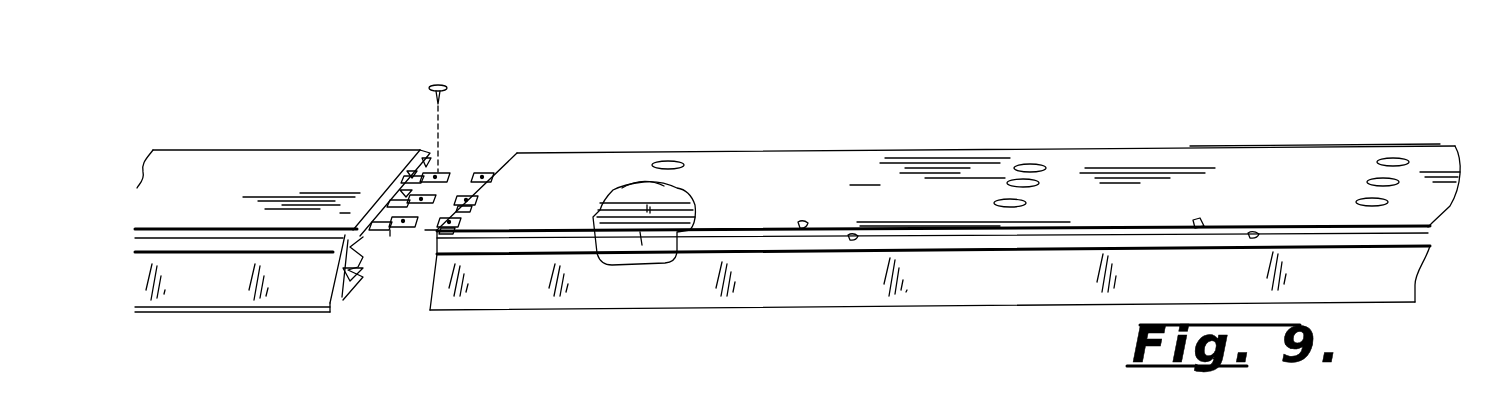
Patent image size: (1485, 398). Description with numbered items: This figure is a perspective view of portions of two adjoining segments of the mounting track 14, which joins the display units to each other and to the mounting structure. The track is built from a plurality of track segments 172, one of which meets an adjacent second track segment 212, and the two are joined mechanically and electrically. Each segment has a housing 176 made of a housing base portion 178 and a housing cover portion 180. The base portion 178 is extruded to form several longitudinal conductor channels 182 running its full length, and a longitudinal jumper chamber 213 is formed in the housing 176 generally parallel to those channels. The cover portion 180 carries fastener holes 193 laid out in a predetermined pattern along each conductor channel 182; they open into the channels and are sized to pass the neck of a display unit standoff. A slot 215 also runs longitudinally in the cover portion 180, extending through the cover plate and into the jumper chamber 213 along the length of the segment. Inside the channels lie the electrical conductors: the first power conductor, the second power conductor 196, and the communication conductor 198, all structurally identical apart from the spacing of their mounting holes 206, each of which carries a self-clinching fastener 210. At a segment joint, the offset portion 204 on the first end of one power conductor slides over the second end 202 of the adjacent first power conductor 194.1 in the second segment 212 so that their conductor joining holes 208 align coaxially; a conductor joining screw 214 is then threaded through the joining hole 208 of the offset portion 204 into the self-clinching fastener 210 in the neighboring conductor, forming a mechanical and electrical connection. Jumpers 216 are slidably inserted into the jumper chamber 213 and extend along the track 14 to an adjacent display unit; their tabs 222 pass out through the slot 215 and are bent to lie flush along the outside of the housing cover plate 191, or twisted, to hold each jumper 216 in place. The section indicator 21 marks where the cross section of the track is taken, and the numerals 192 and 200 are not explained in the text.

The mounting track 14 is at (921, 100).
The section line 21 is at (1052, 102).
The track segment 172 is at (254, 176).
The housing 176 is at (623, 298).
The housing base portion 178 is at (397, 237).
The housing cover portion 180 is at (828, 177).
The longitudinal conductor channel 182 is at (390, 237).
The housing cover plate 191 is at (1187, 150).
The bottom corner 192 is at (330, 307).
The fastener holes 193 is at (688, 182).
The adjacent first power conductor 194.1 is at (499, 172).
The second power conductor 196 is at (700, 193).
The communication conductor 198 is at (670, 234).
The connecting bracket 200 is at (380, 197).
The second end 202 is at (495, 175).
The offset portion 204 is at (407, 167).
The mounting holes 206 is at (600, 204).
The conductor joining hole 208 is at (490, 174).
The self-clinching fastener 210 is at (455, 173).
The second track segment 212 is at (883, 192).
The longitudinal jumper chamber 213 is at (373, 243).
The conductor joining screw 214 is at (447, 81).
The slot 215 is at (780, 234).
The jumper 216 is at (803, 222).
The tabs 222 is at (1197, 222).